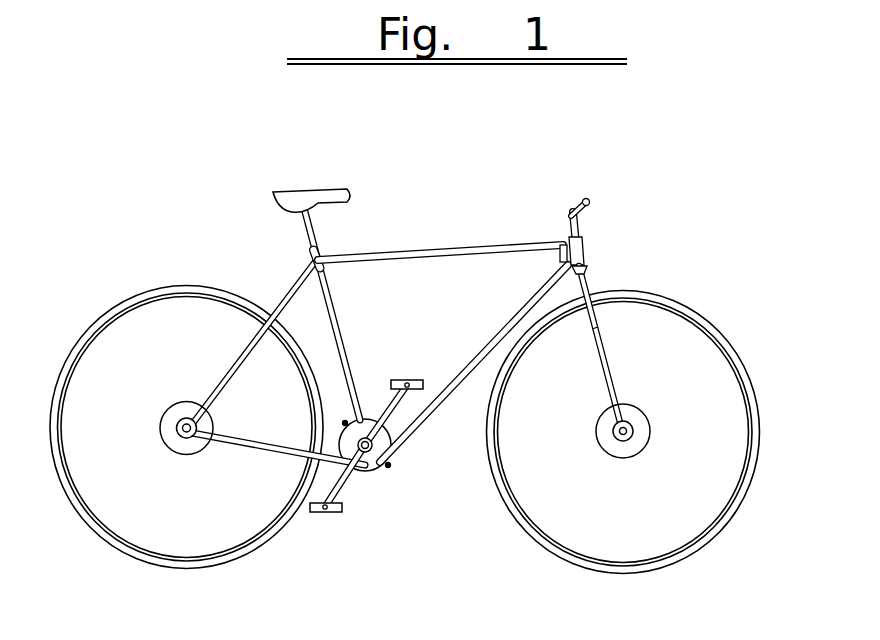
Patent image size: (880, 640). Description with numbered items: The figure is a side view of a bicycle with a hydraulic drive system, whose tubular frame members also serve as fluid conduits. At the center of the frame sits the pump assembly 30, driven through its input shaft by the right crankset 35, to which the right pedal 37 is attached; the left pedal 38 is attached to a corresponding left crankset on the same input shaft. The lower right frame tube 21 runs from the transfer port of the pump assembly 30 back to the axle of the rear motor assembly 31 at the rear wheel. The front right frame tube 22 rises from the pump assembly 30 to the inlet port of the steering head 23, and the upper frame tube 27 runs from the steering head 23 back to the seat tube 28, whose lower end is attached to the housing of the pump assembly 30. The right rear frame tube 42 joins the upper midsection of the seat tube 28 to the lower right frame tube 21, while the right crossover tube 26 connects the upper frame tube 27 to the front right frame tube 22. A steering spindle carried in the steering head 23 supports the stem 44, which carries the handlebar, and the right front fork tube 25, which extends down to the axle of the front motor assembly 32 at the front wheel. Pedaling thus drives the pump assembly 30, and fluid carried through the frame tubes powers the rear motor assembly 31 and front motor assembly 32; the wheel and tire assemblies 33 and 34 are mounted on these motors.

The lower right frame tube 21 is at (233, 443).
The front right frame tube 22 is at (470, 368).
The steering head 23 is at (583, 248).
The right front fork tube 25 is at (598, 330).
The right crossover tube 26 is at (585, 270).
The upper frame tube 27 is at (388, 258).
The seat tube 28 is at (320, 243).
The pump assembly 30 is at (388, 467).
The rear motor assembly 31 is at (168, 430).
The front motor assembly 32 is at (638, 420).
The rear wheel 33 is at (133, 302).
The front wheel 34 is at (712, 533).
The right crankset 35 is at (392, 410).
The right pedal 37 is at (410, 378).
The left pedal 38 is at (323, 510).
The right rear frame tube 42 is at (290, 302).
The stem 44 is at (586, 204).